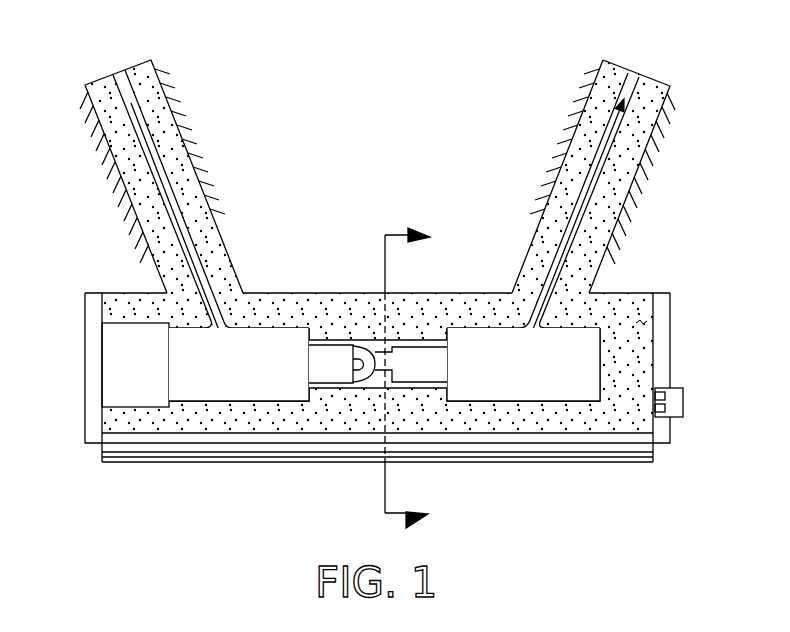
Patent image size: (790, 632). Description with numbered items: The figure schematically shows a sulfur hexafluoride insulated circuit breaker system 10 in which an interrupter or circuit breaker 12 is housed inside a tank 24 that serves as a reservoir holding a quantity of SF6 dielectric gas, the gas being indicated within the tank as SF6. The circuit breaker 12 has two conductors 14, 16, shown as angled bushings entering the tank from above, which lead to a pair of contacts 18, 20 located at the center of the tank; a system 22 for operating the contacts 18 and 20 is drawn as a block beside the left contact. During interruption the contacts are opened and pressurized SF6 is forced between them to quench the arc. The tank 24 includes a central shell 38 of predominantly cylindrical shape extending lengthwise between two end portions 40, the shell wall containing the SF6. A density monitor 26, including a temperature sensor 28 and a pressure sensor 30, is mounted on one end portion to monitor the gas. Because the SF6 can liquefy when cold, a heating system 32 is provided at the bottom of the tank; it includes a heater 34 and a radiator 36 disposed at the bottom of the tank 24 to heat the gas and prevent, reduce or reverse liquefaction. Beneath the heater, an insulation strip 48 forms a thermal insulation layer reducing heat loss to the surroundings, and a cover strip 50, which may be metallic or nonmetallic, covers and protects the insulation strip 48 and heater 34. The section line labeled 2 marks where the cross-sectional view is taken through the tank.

The circuit breaker system 10 is at (497, 50).
The circuit breaker 12 is at (613, 294).
The conductor 14 is at (114, 73).
The conductor 16 is at (641, 73).
The contact 18 is at (325, 343).
The contact 20 is at (383, 346).
The system for operating contacts 22 is at (151, 376).
The tank 24 is at (449, 218).
The density monitor 26 is at (683, 400).
The temperature sensor 28 is at (661, 396).
The pressure sensor 30 is at (661, 411).
The heating system 32 is at (596, 519).
The heater 34 is at (102, 444).
The radiator 36 is at (117, 427).
The central shell 38 is at (480, 293).
The end portion 40 is at (85, 300).
The insulation strip 48 is at (655, 456).
The cover strip 50 is at (133, 462).
The sulfur hexafluoride SF6 is at (644, 322).
The section line 2- 2 is at (406, 379).